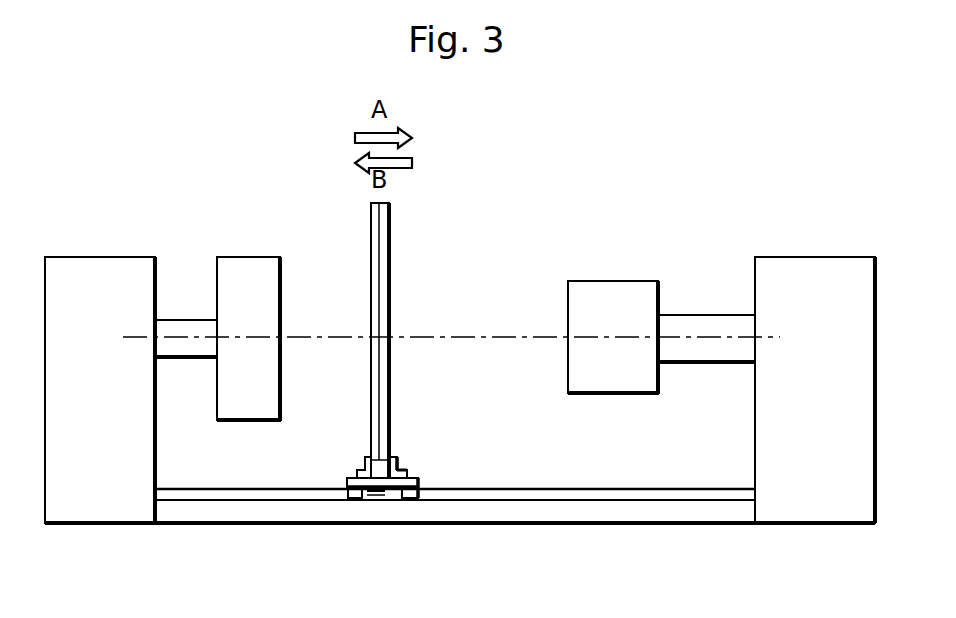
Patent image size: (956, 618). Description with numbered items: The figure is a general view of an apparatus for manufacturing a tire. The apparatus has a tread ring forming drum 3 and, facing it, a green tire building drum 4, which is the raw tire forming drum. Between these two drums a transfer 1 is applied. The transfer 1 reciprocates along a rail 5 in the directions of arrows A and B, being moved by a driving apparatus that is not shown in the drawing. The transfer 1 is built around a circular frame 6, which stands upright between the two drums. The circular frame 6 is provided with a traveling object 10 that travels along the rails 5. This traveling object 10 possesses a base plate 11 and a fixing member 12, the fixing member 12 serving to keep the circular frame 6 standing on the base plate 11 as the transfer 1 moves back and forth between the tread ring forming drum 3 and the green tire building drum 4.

The transfer 1 is at (396, 264).
The tread ring forming drum 3 is at (255, 250).
The green tire building drum 4 is at (613, 274).
The rail 5 is at (582, 489).
The circular frame 6 is at (392, 327).
The traveling object 10 is at (426, 464).
The base plate 11 is at (380, 493).
The fixing member 12 is at (362, 460).